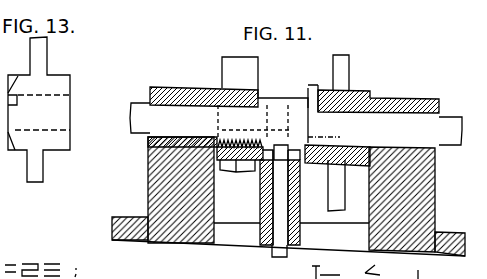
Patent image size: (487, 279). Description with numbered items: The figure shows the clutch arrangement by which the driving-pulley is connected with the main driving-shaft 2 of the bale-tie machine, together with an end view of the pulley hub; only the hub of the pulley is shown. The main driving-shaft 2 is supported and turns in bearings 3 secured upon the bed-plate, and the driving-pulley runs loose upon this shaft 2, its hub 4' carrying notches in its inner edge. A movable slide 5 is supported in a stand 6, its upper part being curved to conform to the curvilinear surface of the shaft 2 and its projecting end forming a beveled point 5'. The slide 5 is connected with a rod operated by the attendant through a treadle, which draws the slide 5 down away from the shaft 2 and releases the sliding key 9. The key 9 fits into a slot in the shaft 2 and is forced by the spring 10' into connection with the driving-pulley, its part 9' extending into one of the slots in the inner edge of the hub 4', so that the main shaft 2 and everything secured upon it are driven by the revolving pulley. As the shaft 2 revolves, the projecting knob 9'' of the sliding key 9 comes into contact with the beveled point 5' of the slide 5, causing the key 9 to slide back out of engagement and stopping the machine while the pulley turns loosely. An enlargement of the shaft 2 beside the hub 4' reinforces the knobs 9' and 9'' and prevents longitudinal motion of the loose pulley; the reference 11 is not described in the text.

In FIG. 11, the main driving-shaft 2 is at (287, 124).
In FIG. 11, the bearings 3 is at (293, 118).
In FIG. 13, the hub of the driving-pulley 4' is at (39, 109).
In FIG. 11, the hub of the driving-pulley 4' is at (345, 133).
In FIG. 11, the movable slide 5 is at (286, 203).
In FIG. 11, the beveled point of the slide 5' is at (286, 133).
In FIG. 11, the stand 6 is at (261, 197).
In FIG. 11, the sliding key 9 is at (279, 121).
In FIG. 11, the part of the key 9' is at (304, 166).
In FIG. 11, the projecting knob of the sliding key 9'' is at (275, 121).
In FIG. 11, the spring 10' is at (240, 170).
In FIG. 13, the notch 11 is at (9, 109).